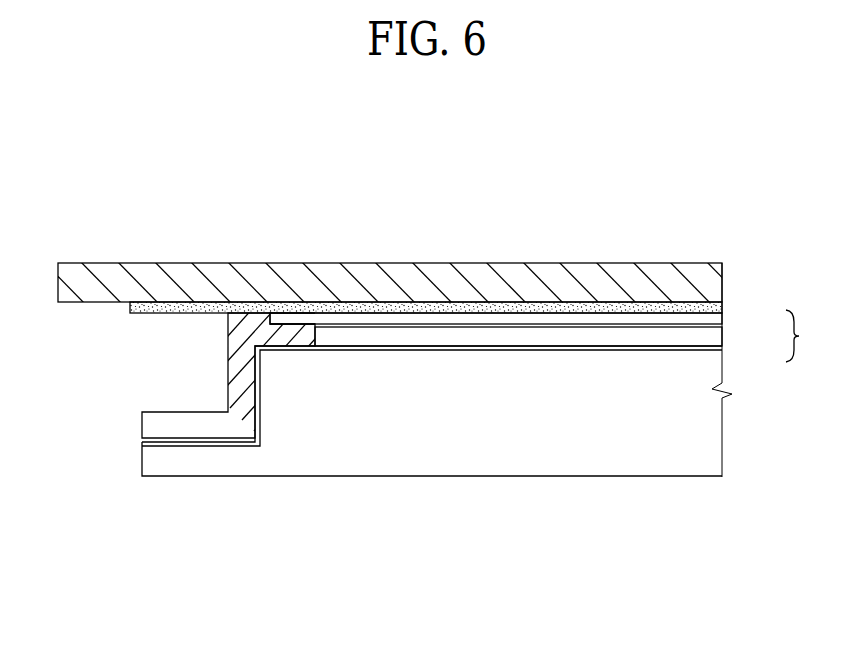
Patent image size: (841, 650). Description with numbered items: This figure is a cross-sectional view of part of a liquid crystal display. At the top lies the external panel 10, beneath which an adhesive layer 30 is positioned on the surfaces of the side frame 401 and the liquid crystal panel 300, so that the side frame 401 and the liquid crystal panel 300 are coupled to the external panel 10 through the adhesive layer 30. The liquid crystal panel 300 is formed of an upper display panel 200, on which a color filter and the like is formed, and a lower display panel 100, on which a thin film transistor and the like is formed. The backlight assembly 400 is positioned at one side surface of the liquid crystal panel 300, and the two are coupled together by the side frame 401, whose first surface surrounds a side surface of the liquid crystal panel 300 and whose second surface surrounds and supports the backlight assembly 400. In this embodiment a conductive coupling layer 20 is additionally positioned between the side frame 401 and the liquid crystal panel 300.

The external panel 10 is at (597, 287).
The conductive coupling layer 20 is at (322, 318).
The adhesive layer 30 is at (513, 308).
The lower display panel 100 is at (710, 339).
The upper display panel 200 is at (708, 318).
The liquid crystal panel 300 is at (809, 336).
The backlight assembly 400 is at (462, 452).
The side frame 401 is at (233, 358).